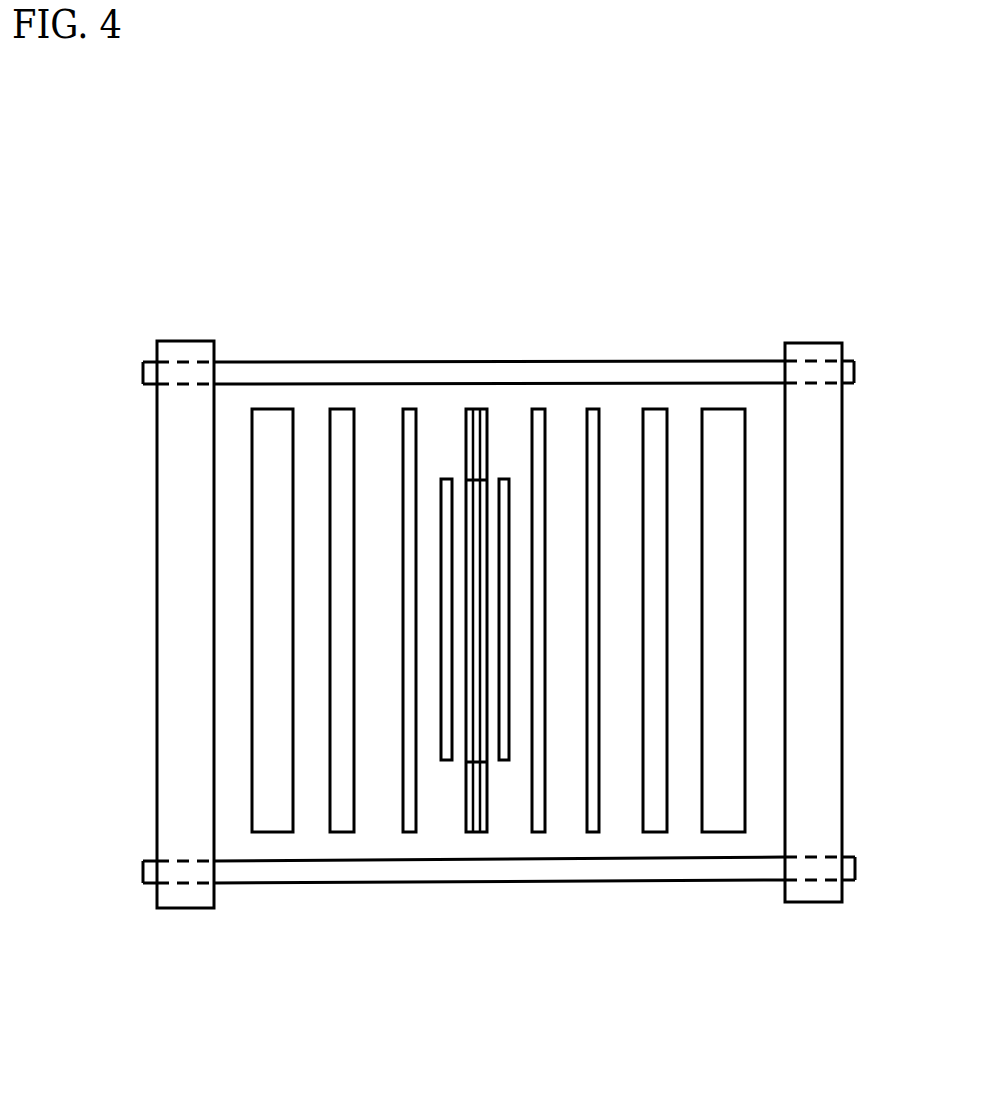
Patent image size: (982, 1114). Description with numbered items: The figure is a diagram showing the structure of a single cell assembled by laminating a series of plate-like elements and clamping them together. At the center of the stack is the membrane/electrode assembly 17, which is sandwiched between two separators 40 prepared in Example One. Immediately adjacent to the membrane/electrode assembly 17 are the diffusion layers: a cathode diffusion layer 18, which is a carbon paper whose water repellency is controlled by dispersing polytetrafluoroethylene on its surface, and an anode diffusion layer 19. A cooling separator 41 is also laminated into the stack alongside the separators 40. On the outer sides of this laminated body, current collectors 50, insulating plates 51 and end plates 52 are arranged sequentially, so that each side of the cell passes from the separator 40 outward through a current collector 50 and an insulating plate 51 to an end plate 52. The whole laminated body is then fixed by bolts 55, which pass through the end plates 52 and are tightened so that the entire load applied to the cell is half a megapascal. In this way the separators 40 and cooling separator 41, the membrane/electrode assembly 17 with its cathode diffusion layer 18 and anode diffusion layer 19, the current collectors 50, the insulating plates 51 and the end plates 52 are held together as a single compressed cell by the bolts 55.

The membrane/electrode assembly 17 is at (477, 409).
The cathode diffusion layer 18 is at (504, 479).
The anode diffusion layer 19 is at (446, 479).
The separator 40 is at (408, 409).
The cooling separator 41 is at (592, 409).
The current collector 50 is at (344, 409).
The insulating plate 51 is at (271, 409).
The end plate 52 is at (185, 341).
The bolt 55 is at (852, 366).